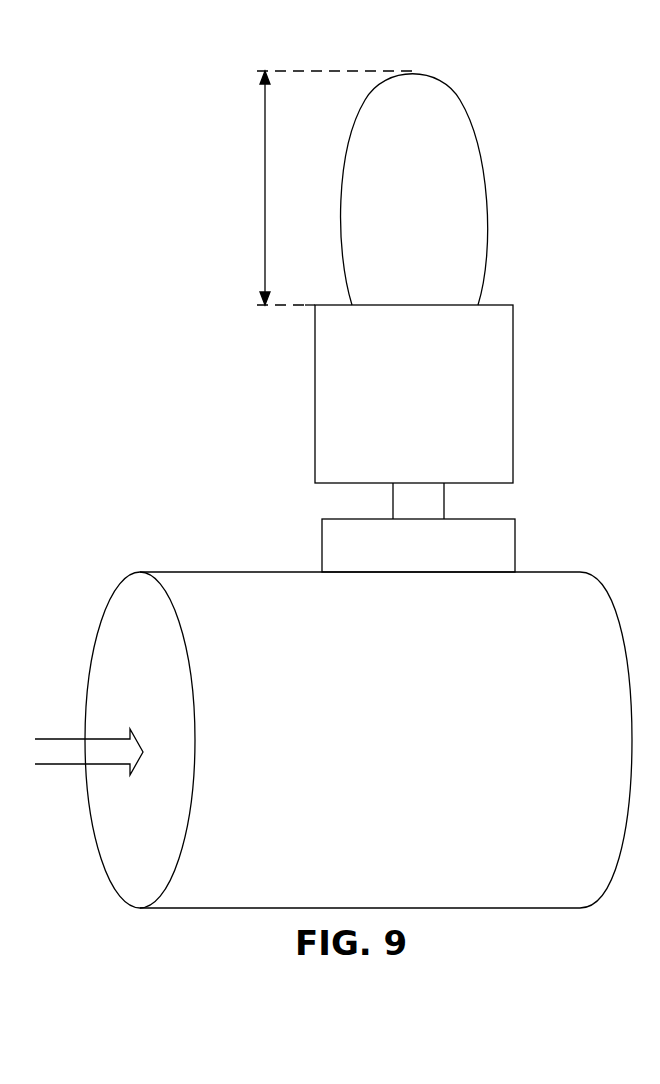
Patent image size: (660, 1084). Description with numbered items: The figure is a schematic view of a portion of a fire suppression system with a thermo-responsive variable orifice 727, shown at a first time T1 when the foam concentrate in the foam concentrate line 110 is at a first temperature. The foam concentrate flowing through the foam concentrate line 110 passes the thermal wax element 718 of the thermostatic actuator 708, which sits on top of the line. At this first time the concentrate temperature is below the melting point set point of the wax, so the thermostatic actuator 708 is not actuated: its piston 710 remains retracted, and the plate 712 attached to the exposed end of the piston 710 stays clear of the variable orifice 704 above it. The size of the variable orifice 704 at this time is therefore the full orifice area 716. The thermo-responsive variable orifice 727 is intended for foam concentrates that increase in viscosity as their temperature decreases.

The foam concentrate line 110 is at (456, 752).
The variable orifice 704 is at (472, 202).
The thermostatic actuator 708 is at (364, 427).
The piston 710 is at (418, 502).
The plate 712 is at (493, 358).
The orifice area 716 is at (202, 221).
The thermal wax element 718 is at (518, 533).
The thermo-responsive variable orifice 727 is at (165, 104).